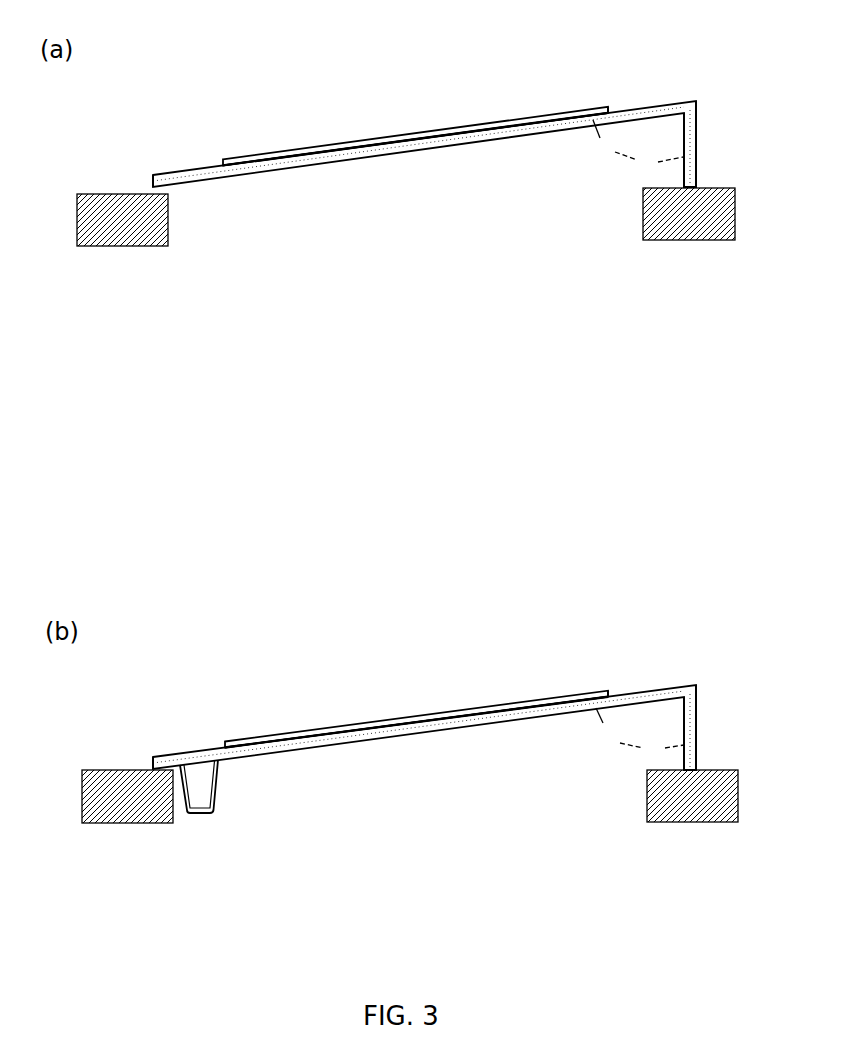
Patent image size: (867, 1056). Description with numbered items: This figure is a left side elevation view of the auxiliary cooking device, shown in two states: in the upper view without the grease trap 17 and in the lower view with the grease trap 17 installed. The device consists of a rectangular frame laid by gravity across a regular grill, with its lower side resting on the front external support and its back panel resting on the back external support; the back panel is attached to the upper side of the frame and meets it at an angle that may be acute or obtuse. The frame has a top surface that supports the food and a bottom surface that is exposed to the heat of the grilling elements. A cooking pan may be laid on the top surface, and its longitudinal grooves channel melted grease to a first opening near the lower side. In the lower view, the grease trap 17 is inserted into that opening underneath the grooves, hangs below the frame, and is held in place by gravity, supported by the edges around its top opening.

The grease trap 17 is at (208, 816).